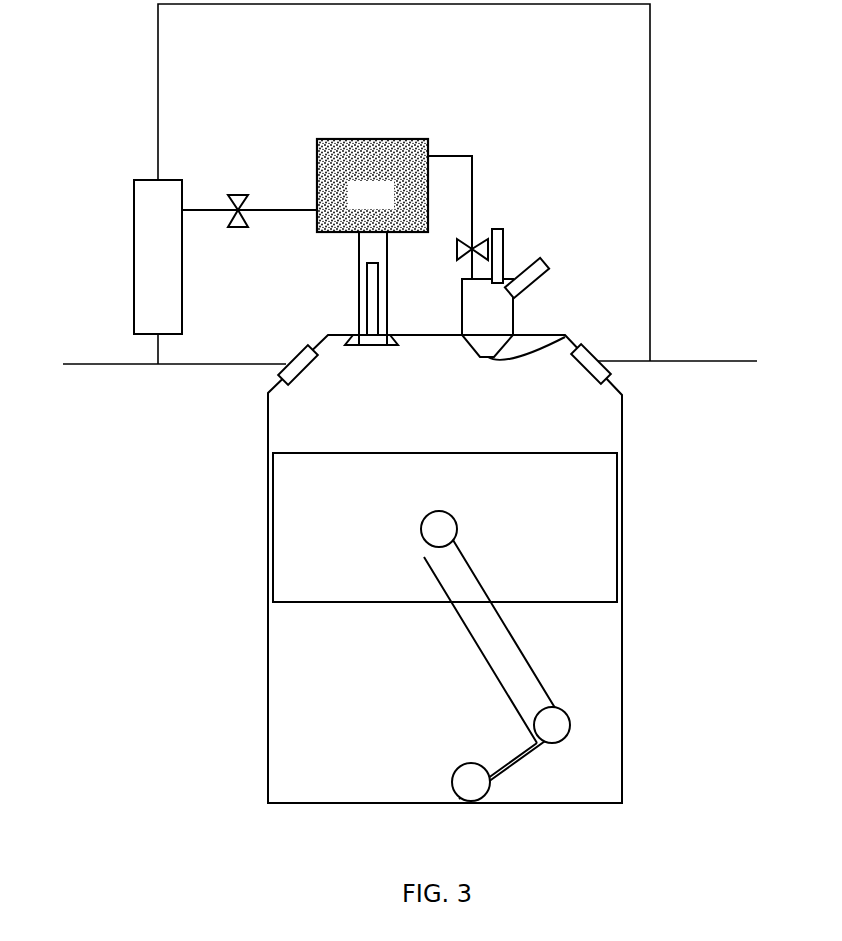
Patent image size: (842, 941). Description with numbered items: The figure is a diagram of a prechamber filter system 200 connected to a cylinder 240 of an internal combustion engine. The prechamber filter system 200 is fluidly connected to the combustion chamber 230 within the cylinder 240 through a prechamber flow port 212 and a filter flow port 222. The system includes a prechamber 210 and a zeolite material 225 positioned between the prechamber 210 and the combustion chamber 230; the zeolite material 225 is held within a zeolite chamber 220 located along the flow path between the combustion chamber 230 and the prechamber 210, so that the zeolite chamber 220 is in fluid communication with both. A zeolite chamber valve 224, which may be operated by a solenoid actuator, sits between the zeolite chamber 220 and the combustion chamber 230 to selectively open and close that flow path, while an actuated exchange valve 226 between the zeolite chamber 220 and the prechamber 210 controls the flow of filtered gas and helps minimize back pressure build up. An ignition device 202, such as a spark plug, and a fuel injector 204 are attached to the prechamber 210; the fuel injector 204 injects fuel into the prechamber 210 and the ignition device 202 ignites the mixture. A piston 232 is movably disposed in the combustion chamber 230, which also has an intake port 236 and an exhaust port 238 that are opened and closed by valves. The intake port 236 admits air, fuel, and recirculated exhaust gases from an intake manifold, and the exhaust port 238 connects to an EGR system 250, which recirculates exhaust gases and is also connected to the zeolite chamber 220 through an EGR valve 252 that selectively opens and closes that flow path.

The prechamber filter system 200 is at (333, 98).
The ignition device 202 is at (497, 229).
The fuel injector 204 is at (548, 262).
The prechamber 210 is at (508, 331).
The prechamber flow port 212 is at (565, 337).
The zeolite chamber 220 is at (372, 145).
The filter flow port 222 is at (388, 335).
The zeolite chamber valve 224 is at (355, 335).
The zeolite material 225 is at (392, 206).
The exchange valve 226 is at (473, 248).
The combustion chamber 230 is at (347, 423).
The piston 232 is at (588, 533).
The intake port 236 is at (608, 377).
The exhaust port 238 is at (277, 377).
The cylinder 240 is at (499, 569).
The EGR system 250 is at (140, 180).
The EGR valve 252 is at (238, 193).